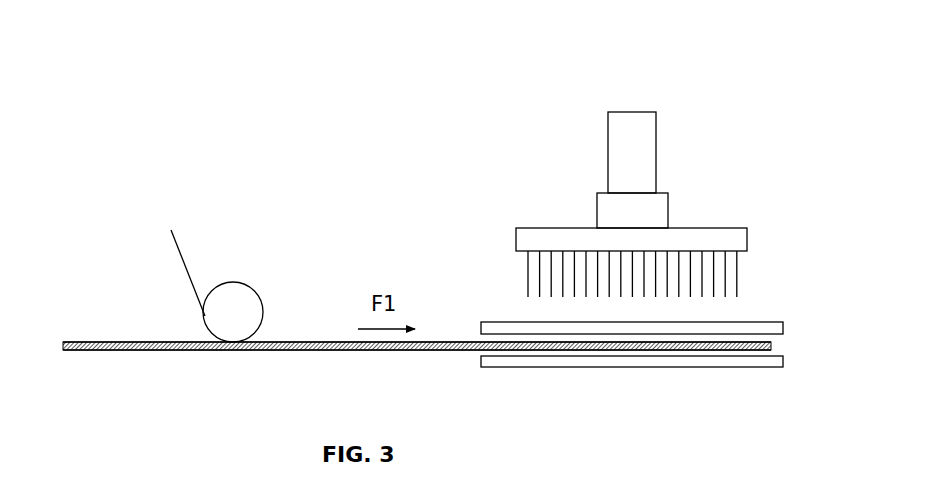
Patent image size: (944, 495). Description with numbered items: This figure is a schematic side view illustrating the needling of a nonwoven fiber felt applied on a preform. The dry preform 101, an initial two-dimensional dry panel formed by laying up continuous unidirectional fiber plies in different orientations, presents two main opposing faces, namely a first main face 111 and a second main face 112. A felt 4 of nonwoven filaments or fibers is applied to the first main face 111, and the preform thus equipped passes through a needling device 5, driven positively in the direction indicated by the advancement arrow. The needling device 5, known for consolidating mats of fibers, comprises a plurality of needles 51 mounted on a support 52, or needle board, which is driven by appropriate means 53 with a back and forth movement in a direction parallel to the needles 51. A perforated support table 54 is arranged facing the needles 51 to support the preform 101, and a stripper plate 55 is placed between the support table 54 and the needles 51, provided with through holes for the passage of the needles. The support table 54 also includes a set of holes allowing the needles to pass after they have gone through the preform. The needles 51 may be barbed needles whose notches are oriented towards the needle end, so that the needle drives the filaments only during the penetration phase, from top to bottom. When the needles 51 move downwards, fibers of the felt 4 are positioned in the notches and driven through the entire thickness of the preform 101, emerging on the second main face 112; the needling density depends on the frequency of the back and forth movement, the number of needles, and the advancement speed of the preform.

The felt 4 is at (181, 250).
The needling device 5 is at (657, 180).
The needles 51 is at (740, 289).
The support 52 is at (738, 244).
The means 53 is at (633, 118).
The perforated support table 54 is at (768, 368).
The stripper plate 55 is at (784, 328).
The dry preform 101 is at (71, 342).
The first main face 111 is at (141, 342).
The second main face 112 is at (166, 351).